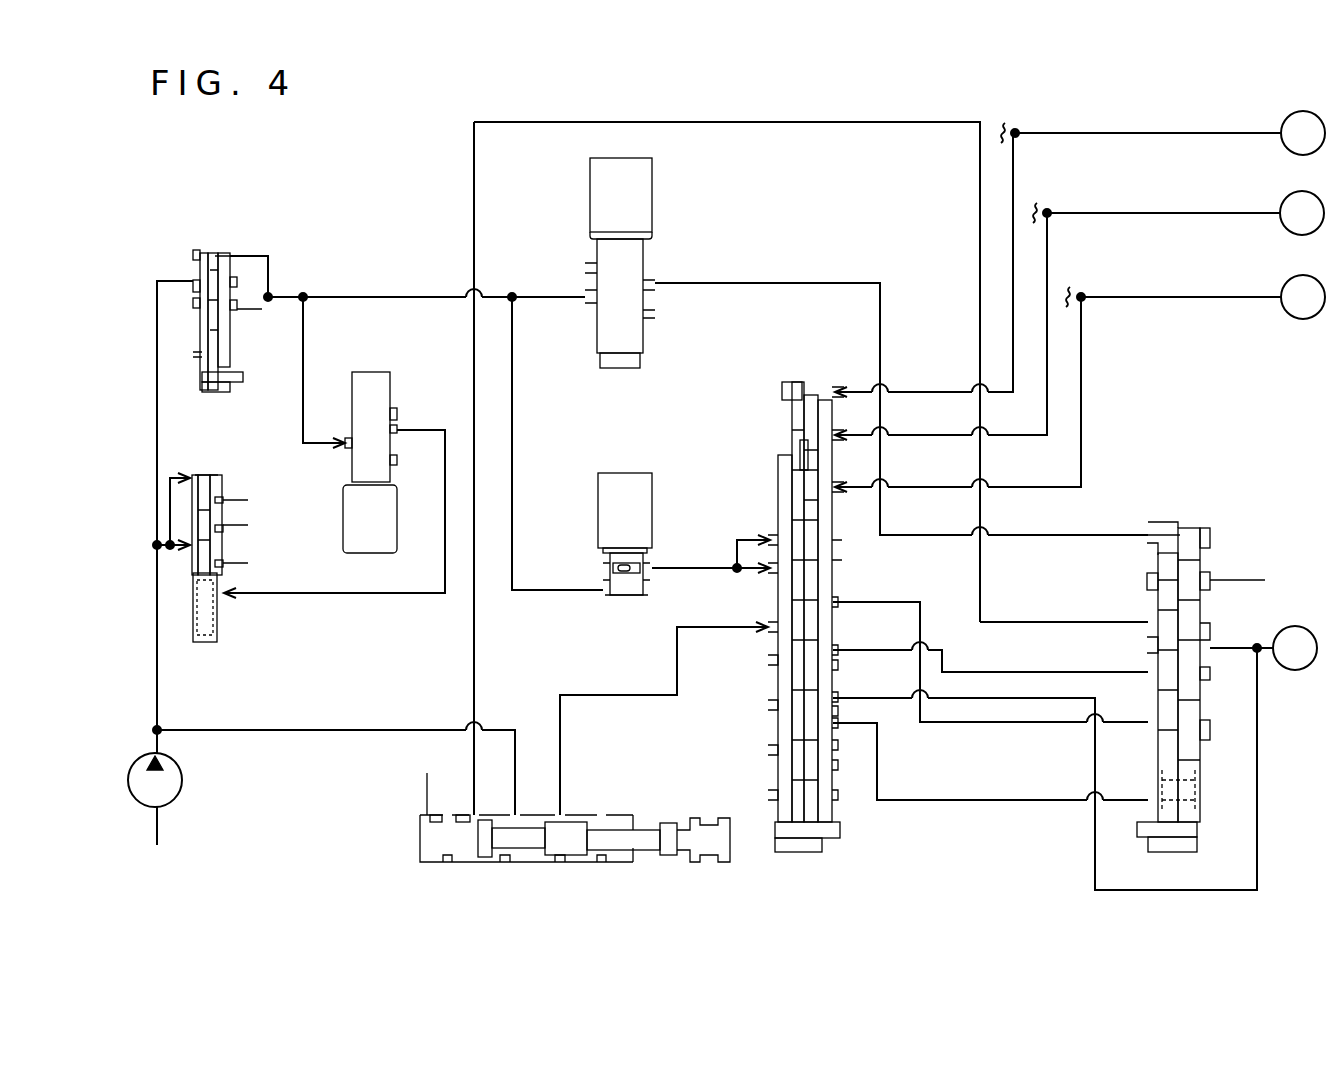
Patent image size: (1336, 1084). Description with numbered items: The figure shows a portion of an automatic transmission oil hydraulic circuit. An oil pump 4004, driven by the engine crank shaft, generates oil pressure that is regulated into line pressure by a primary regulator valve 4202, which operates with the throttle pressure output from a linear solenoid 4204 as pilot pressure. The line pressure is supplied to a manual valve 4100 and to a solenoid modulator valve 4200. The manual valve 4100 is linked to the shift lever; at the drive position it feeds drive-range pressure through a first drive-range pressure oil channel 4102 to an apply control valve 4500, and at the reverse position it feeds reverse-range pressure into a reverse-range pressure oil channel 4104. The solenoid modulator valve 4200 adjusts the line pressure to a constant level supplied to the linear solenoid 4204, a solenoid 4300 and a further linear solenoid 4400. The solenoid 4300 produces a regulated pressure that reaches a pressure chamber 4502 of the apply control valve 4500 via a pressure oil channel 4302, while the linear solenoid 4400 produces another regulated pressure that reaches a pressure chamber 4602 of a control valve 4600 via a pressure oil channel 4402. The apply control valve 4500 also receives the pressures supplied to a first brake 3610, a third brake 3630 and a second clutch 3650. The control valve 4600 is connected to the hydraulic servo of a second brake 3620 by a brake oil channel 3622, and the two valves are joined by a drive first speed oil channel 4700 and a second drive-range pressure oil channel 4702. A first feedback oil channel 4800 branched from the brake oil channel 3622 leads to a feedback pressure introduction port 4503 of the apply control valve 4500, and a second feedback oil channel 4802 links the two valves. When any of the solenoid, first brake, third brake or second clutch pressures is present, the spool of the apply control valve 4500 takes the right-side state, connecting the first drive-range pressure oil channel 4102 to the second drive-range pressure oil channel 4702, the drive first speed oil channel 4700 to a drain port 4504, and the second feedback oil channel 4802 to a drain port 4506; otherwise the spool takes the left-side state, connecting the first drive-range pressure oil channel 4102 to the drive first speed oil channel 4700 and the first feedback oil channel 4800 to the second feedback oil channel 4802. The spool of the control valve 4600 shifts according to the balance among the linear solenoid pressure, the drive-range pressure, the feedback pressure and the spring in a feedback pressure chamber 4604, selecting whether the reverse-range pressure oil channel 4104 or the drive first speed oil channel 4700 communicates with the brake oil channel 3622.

The B1 brake 3610 is at (1287, 118).
The B2 brake 3620 is at (1282, 632).
The B2 oil channel 3622 is at (1230, 652).
The B3 brake 3630 is at (1287, 198).
The C2 clutch 3650 is at (1287, 283).
The oil pump 4004 is at (182, 780).
The manual valve 4100 is at (592, 812).
The first D-range pressure oil channel 4102 is at (712, 630).
The R-range pressure oil channel 4104 is at (474, 650).
The solenoid modulator valve 4200 is at (212, 394).
The primary regulator valve 4202 is at (205, 646).
The linear solenoid (SLT) 4204 is at (393, 343).
The solenoid (SL) 4300 is at (640, 473).
The SL pressure oil channel 4302 is at (695, 562).
The linear solenoid (SLU) 4400 is at (590, 180).
The SLU pressure oil channel 4402 is at (755, 283).
The B2 apply control valve 4500 is at (812, 631).
The SL pressure chamber 4502 is at (772, 535).
The feedback pressure introduction port 4503 is at (853, 717).
The drain port 4504 is at (851, 676).
The drain port 4506 is at (846, 764).
The B2 control valve 4600 is at (1195, 729).
The SLU pressure chamber 4602 is at (1148, 543).
The feedback pressure chamber 4604 is at (1190, 795).
The D 1st speed oil channel 4700 is at (942, 645).
The second D-range pressure oil channel 4702 is at (868, 597).
The first feedback oil channel 4800 is at (1110, 890).
The second feedback oil channel 4802 is at (1000, 803).